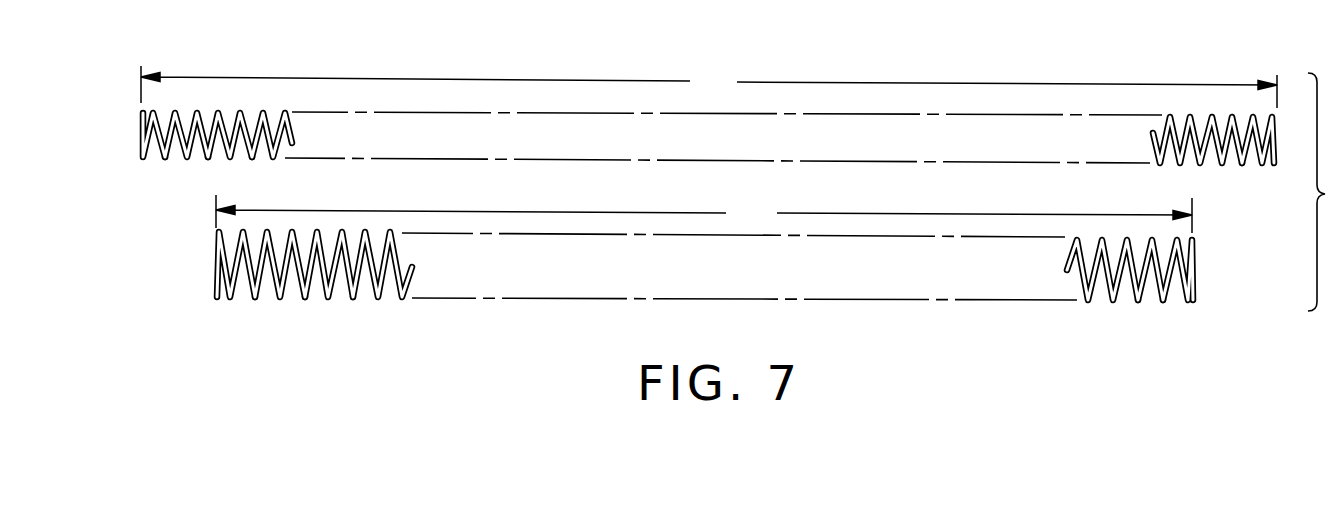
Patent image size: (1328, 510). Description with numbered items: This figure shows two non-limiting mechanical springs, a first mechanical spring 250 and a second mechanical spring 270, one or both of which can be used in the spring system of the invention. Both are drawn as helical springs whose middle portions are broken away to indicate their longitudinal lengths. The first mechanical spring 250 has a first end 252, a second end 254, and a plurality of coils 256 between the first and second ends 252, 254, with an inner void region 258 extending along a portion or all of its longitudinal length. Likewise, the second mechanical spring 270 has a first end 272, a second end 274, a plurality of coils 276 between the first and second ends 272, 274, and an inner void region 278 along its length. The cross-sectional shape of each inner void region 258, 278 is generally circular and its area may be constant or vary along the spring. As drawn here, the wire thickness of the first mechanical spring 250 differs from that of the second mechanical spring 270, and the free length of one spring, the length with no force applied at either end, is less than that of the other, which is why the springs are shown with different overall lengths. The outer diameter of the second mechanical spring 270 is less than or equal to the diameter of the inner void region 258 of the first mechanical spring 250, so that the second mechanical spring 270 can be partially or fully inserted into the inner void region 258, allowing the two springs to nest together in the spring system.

The first mechanical spring 250 is at (707, 287).
The first end 252 is at (1193, 298).
The second end 254 is at (217, 291).
The plurality of coils 256 is at (377, 302).
The inner void region 258 is at (295, 293).
The second mechanical spring 270 is at (682, 127).
The first end 272 is at (1273, 172).
The second end 274 is at (140, 127).
The plurality of coils 276 is at (228, 160).
The inner void region 278 is at (176, 160).